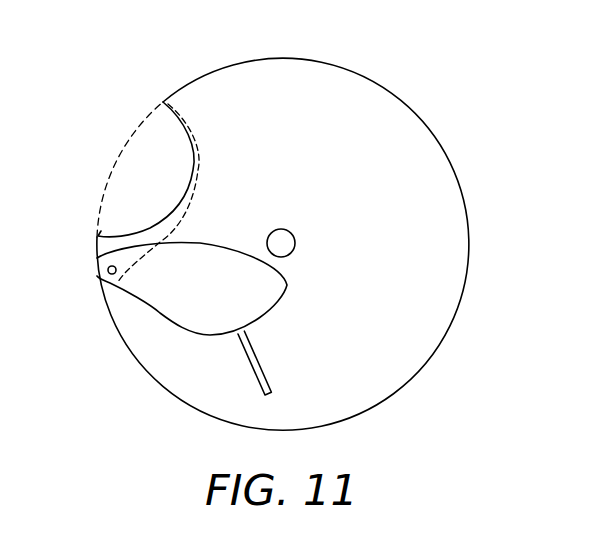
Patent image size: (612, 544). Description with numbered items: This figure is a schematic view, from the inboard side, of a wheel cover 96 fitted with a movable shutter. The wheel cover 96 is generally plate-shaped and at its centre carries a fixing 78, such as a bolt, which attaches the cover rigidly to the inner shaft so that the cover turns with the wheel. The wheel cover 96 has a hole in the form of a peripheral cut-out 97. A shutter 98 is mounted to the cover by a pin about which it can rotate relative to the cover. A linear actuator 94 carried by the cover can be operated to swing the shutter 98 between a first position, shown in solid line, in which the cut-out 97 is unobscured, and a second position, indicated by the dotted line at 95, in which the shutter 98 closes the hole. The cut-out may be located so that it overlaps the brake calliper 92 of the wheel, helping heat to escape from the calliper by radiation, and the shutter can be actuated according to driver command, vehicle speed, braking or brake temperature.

The fixing 78 is at (295, 243).
The brake calliper 92 is at (173, 308).
The linear actuator 94 is at (265, 370).
The second position of shutter 95 is at (130, 137).
The wheel cover 96 is at (425, 198).
The peripheral cut-out 97 is at (125, 188).
The shutter 98 is at (108, 270).